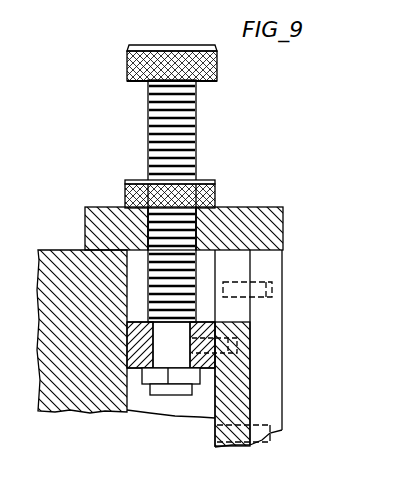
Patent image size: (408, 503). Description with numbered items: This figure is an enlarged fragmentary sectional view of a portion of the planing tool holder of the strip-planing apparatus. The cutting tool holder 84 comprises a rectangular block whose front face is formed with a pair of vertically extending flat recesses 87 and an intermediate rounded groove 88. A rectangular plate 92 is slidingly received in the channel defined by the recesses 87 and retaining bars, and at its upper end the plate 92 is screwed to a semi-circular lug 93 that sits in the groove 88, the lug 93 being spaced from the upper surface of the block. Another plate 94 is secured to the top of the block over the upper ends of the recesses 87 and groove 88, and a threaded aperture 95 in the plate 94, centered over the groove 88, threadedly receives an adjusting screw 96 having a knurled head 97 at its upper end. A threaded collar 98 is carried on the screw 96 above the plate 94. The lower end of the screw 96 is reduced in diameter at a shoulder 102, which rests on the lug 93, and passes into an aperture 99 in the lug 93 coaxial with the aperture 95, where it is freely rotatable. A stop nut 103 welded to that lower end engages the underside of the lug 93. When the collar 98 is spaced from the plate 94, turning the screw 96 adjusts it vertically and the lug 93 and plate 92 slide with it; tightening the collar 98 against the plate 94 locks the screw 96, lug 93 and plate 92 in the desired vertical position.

The cutting tool holder 84 is at (65, 402).
The flat recesses 87 is at (275, 277).
The rounded groove 88 is at (172, 403).
The rectangular plate 92 is at (245, 402).
The semi-circular lug 93 is at (133, 372).
The plate 94 is at (98, 222).
The threaded aperture 95 is at (185, 230).
The adjusting screw 96 is at (197, 140).
The knurled head 97 is at (232, 66).
The threaded collar 98 is at (138, 195).
The aperture 99 is at (158, 350).
The shoulder 102 is at (205, 328).
The stop nut 103 is at (190, 377).